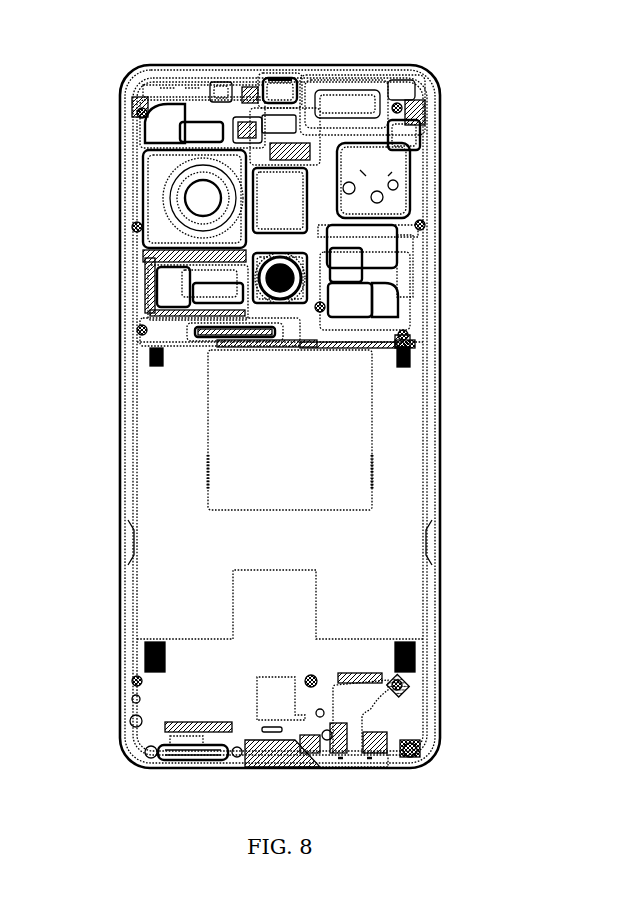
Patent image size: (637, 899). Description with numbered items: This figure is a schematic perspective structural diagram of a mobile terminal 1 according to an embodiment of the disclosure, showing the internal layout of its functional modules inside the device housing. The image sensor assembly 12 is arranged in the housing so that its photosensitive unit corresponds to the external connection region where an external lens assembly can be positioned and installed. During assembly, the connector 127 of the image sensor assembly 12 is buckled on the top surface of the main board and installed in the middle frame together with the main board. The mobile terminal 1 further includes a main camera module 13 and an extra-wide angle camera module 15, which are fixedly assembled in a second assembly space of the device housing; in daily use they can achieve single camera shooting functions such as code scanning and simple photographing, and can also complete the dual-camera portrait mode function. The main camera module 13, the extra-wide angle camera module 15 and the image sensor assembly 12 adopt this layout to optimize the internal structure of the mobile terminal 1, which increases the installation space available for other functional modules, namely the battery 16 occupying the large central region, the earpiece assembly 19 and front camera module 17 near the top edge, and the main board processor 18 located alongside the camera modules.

The mobile terminal 1 is at (58, 59).
The image sensor assembly 12 is at (292, 200).
The main camera module 13 is at (200, 205).
The extra-wide angle camera module 15 is at (303, 300).
The battery 16 is at (227, 475).
The front camera module 17 is at (283, 97).
The main board processor 18 is at (390, 200).
The earpiece assembly 19 is at (352, 102).
The connector 127 is at (223, 293).